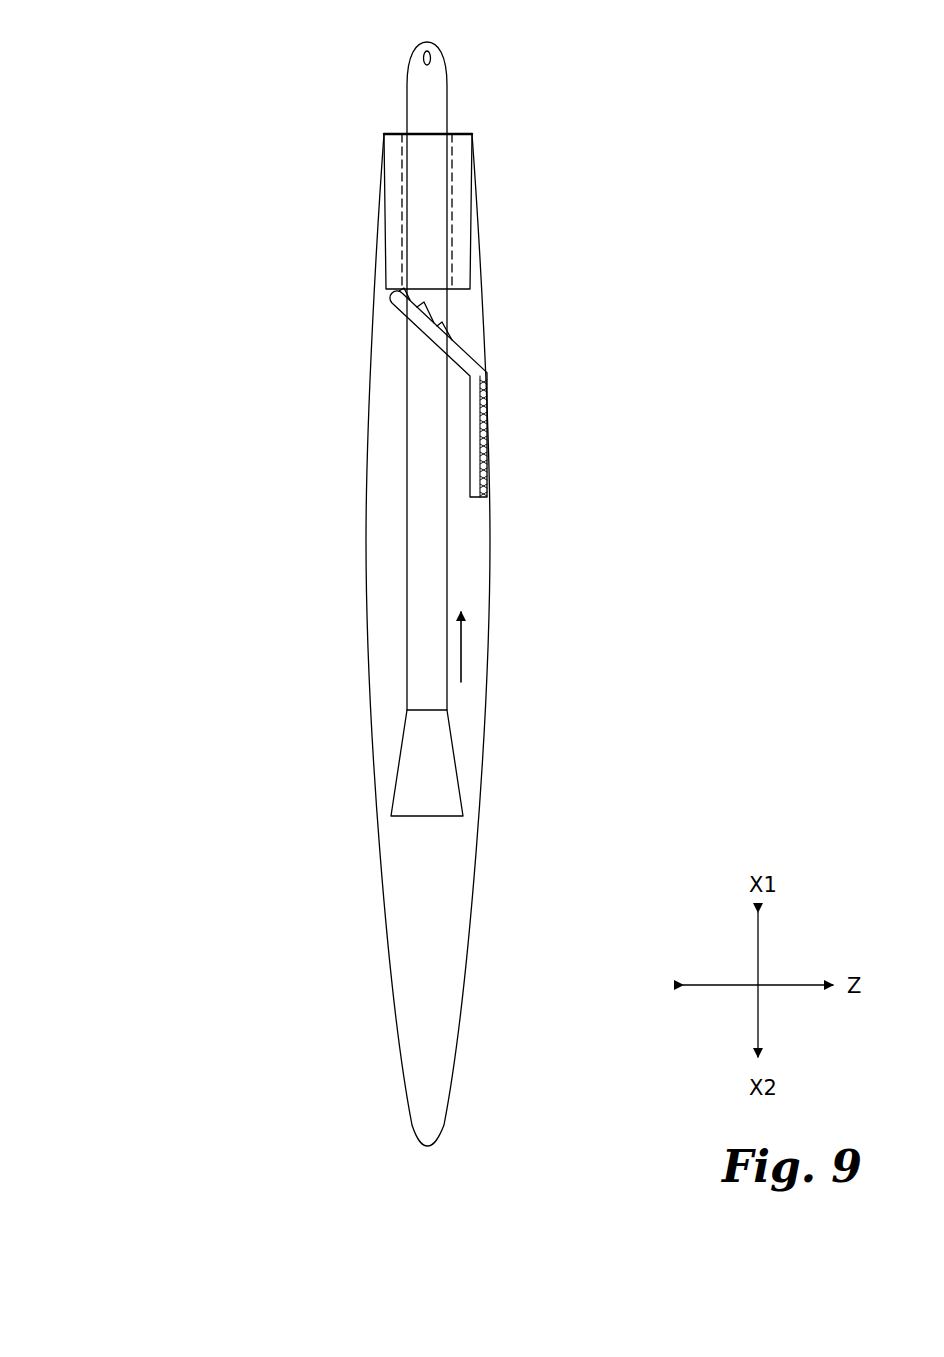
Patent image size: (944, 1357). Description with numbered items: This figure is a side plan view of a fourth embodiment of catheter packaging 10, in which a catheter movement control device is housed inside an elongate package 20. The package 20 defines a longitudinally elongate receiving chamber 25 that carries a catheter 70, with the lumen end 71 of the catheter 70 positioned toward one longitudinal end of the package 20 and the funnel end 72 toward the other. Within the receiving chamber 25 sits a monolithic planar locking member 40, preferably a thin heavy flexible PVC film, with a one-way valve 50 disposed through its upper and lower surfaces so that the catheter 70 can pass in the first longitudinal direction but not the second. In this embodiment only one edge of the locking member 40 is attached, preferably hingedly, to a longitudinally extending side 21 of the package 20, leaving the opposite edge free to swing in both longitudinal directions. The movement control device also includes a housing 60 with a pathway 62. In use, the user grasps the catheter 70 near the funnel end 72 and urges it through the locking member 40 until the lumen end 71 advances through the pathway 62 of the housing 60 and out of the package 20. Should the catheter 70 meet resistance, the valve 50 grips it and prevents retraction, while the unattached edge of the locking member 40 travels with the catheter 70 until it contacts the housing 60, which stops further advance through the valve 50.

The catheter packaging 10 is at (122, 128).
The package 20 is at (368, 428).
The longitudinally extending side 21 is at (487, 640).
The receiving chamber 25 is at (462, 858).
The monolithic planar locking member 40 is at (477, 355).
The valve 50 is at (412, 304).
The housing 60 is at (470, 182).
The pathway 62 is at (381, 148).
The catheter 70 is at (415, 658).
The lumen end 71 is at (432, 44).
The funnel end 72 is at (433, 745).